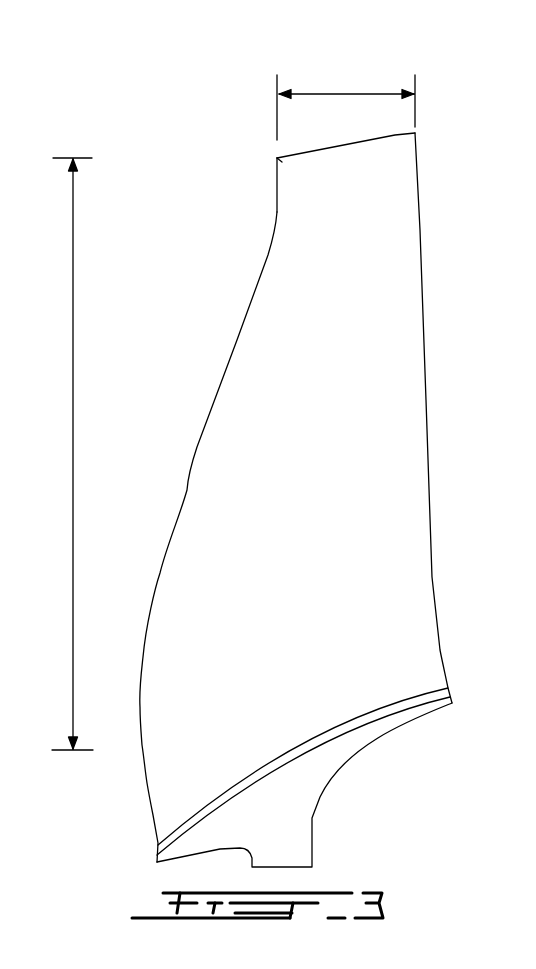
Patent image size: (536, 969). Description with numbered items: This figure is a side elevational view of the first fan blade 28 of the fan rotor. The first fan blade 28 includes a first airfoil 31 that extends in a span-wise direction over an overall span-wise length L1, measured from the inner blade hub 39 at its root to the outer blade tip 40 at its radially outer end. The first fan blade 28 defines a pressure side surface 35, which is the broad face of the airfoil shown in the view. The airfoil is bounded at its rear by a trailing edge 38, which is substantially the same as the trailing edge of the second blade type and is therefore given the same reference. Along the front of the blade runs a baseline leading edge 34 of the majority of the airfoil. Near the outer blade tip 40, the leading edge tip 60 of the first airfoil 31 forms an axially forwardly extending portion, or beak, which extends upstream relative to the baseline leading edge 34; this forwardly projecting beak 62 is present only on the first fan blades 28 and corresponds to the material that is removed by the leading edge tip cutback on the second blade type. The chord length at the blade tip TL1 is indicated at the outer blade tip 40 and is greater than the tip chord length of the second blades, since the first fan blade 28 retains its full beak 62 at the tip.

The first fan blade 28 is at (228, 225).
The first airfoil 31 is at (215, 497).
The leading edge 34 is at (237, 340).
The pressure side surface 35 is at (327, 523).
The trailing edge 38 is at (432, 578).
The inner blade hub 39 is at (301, 810).
The outer blade tip 40 is at (395, 135).
The leading edge tip 60 is at (267, 195).
The forwardly projecting beak 62 is at (277, 158).
The chord length at the blade tip TL1 is at (345, 93).
The overall span-wise length L1 is at (72, 450).